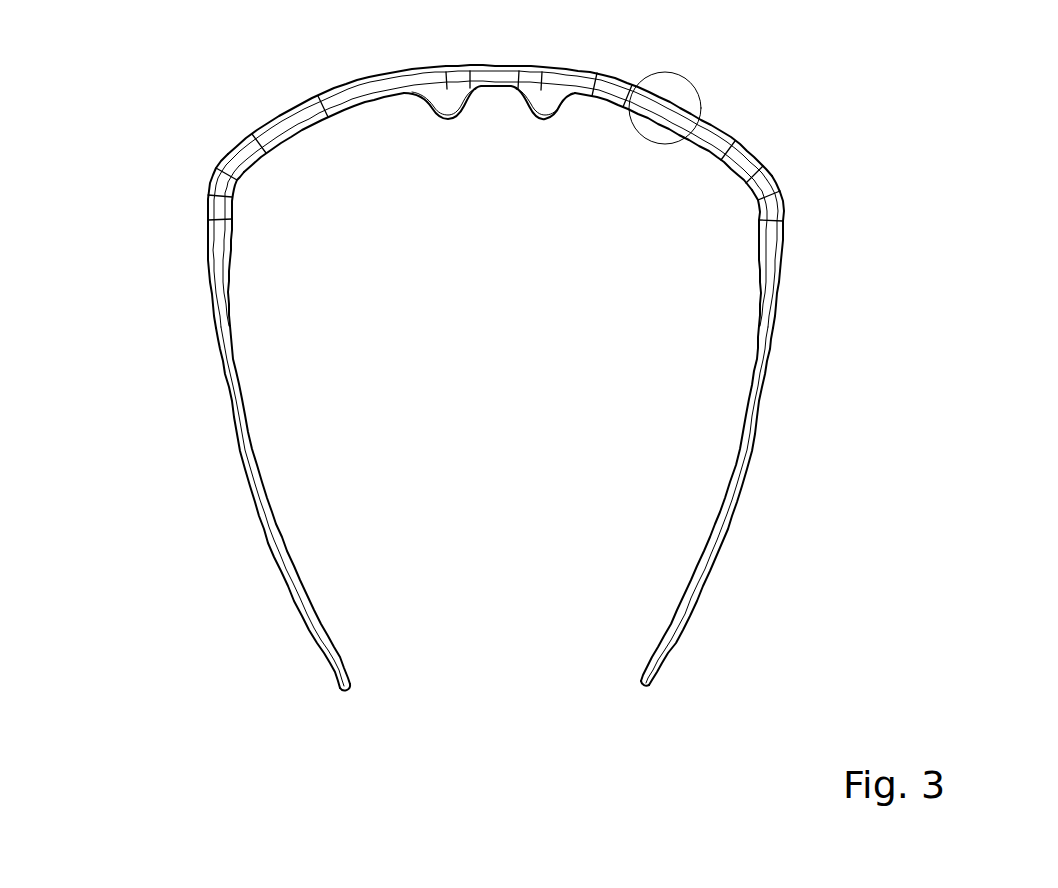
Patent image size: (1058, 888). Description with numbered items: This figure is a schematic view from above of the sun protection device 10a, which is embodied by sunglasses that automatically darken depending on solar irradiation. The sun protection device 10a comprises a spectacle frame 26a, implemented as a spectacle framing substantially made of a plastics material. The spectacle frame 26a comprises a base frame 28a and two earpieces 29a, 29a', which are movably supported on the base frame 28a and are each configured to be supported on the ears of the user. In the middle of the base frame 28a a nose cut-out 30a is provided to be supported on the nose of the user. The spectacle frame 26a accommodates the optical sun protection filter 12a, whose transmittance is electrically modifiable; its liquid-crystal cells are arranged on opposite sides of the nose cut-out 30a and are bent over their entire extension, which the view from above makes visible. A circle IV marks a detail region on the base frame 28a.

The sun protection device 10a is at (482, 373).
The optical sun protection filter 12a is at (565, 164).
The spectacle frame 26a is at (183, 227).
The base frame 28a is at (324, 106).
The earpiece 29a is at (760, 506).
The earpiece 29a' is at (227, 508).
The nose cut-out 30a is at (497, 112).
The detail view marker IV is at (670, 71).